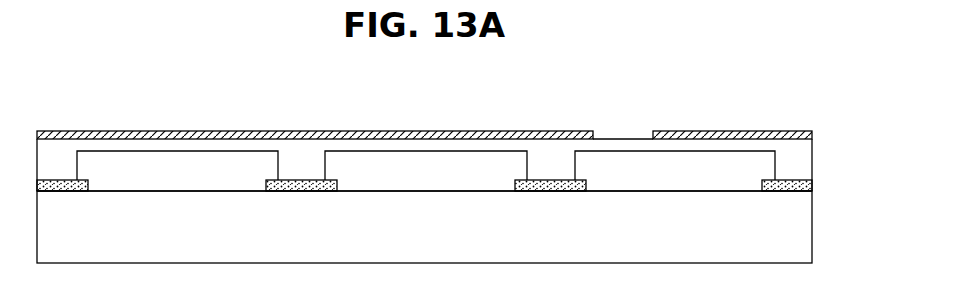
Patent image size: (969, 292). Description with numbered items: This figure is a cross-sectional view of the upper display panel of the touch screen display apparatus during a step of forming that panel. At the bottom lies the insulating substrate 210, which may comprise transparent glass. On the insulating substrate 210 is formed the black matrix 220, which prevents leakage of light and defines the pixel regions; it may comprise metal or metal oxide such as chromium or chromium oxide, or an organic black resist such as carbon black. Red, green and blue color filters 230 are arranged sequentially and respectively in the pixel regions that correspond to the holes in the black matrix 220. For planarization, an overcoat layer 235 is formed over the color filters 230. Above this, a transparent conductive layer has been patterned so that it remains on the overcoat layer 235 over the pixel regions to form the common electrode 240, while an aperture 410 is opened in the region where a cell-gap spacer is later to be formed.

The insulating substrate 210 is at (800, 226).
The black matrix 220 is at (812, 183).
The R, G and B color filters 230 is at (704, 177).
The overcoat layer 235 is at (800, 144).
The common electrode 240 is at (812, 133).
The aperture 410 is at (627, 123).